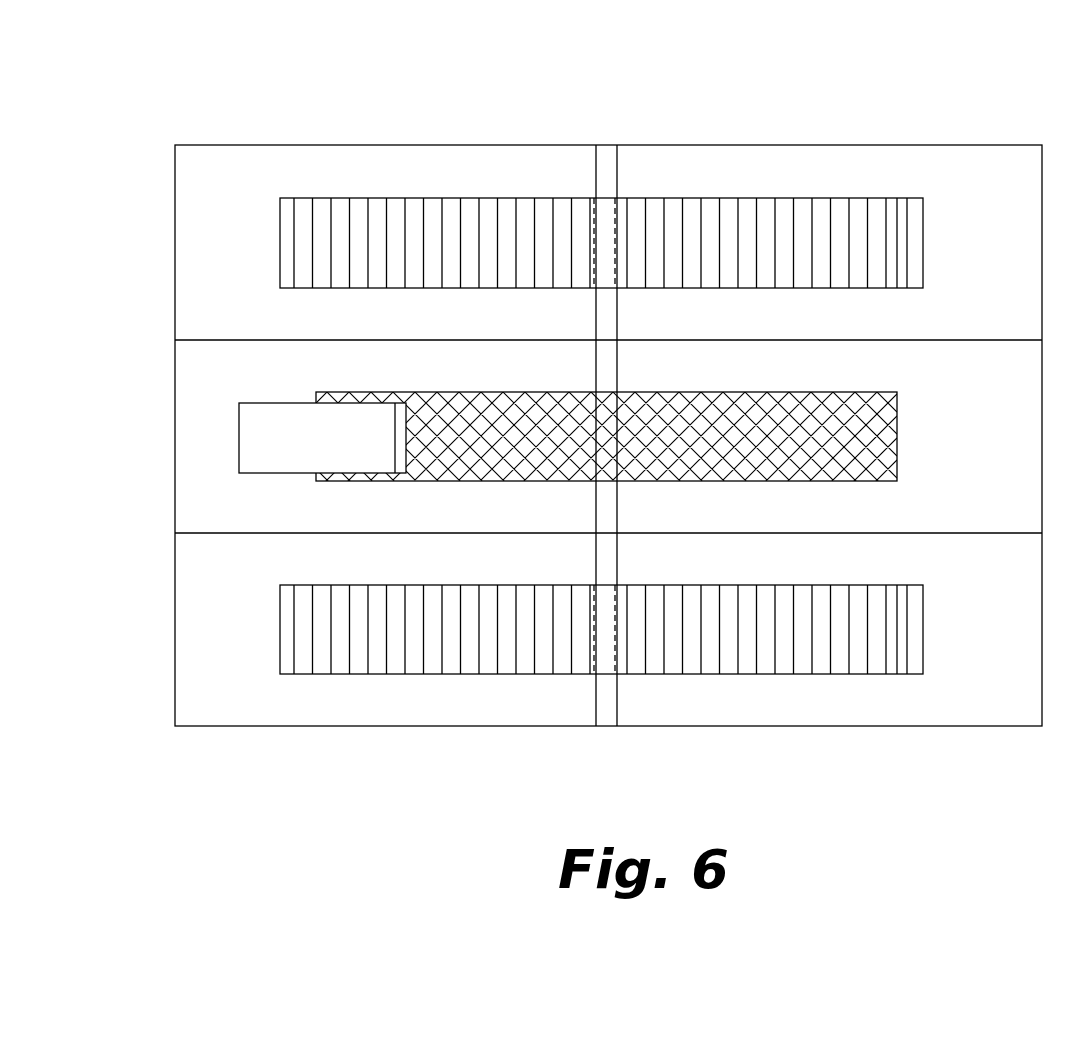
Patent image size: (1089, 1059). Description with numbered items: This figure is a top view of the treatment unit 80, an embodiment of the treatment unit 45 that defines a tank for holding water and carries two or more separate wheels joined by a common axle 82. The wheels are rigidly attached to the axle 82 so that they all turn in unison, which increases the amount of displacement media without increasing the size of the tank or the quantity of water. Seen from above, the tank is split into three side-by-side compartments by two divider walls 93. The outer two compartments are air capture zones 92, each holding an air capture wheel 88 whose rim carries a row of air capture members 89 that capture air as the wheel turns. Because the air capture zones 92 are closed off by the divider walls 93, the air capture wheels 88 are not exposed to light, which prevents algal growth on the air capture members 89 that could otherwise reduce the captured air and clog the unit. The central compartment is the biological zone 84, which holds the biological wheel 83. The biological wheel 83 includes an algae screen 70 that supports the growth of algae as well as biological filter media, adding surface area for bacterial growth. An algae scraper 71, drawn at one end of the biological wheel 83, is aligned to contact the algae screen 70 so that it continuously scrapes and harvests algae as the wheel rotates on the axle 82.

The treatment unit 80 is at (900, 97).
The treatment unit 45 is at (463, 144).
The divider walls 93 is at (176, 341).
The axle 82 is at (617, 328).
The air capture zone 92 is at (213, 218).
The air capture wheels 88 is at (923, 248).
The air capture members 89 is at (400, 212).
The biological zone 84 is at (215, 440).
The algae screen 70 is at (800, 458).
The biological wheel 83 is at (863, 423).
The algae scraper 71 is at (285, 415).